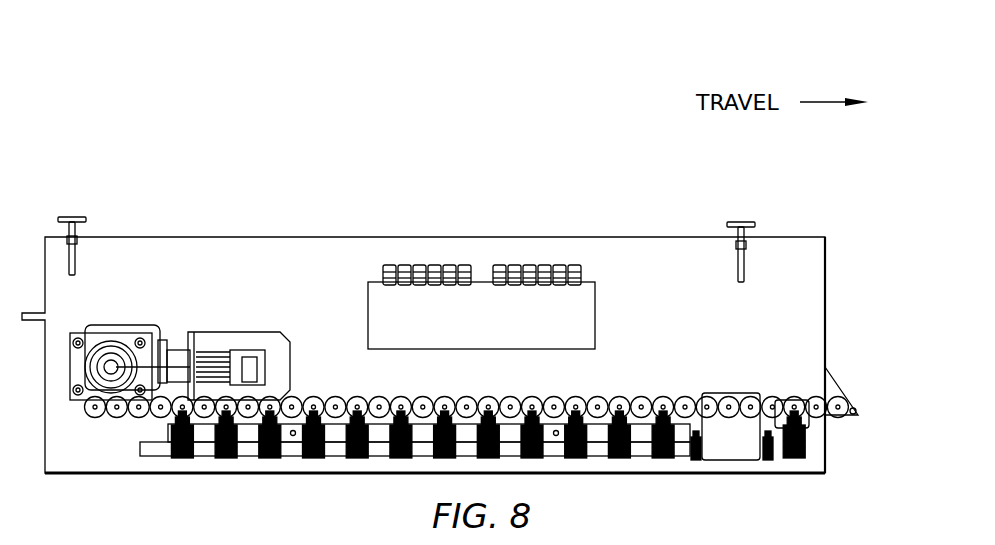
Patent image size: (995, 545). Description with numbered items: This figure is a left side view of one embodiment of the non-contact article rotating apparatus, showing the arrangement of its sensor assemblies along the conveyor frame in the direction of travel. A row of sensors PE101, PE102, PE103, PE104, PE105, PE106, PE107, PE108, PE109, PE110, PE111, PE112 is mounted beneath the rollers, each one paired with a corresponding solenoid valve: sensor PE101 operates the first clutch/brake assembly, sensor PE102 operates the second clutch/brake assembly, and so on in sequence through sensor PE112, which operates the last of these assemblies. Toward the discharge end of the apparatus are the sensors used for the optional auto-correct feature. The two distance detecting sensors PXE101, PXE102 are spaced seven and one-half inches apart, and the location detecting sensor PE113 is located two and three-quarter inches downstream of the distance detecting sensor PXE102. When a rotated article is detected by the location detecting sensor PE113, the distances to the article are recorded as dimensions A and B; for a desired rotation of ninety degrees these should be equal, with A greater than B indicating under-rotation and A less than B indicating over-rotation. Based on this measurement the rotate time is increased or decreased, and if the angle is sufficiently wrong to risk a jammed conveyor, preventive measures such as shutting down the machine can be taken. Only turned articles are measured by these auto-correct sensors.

The sensor PE101 is at (148, 325).
The sensor PE102 is at (193, 312).
The sensor PE103 is at (237, 300).
The sensor PE104 is at (281, 288).
The sensor PE105 is at (325, 275).
The sensor PE106 is at (370, 263).
The sensor PE107 is at (413, 250).
The sensor PE108 is at (531, 262).
The sensor PE109 is at (575, 272).
The sensor PE110 is at (619, 282).
The sensor PE111 is at (663, 293).
The sensor PE112 is at (706, 303).
The location detecting sensor PE113 is at (834, 333).
The distance detecting sensor PXE101 is at (747, 316).
The distance detecting sensor PXE102 is at (819, 325).